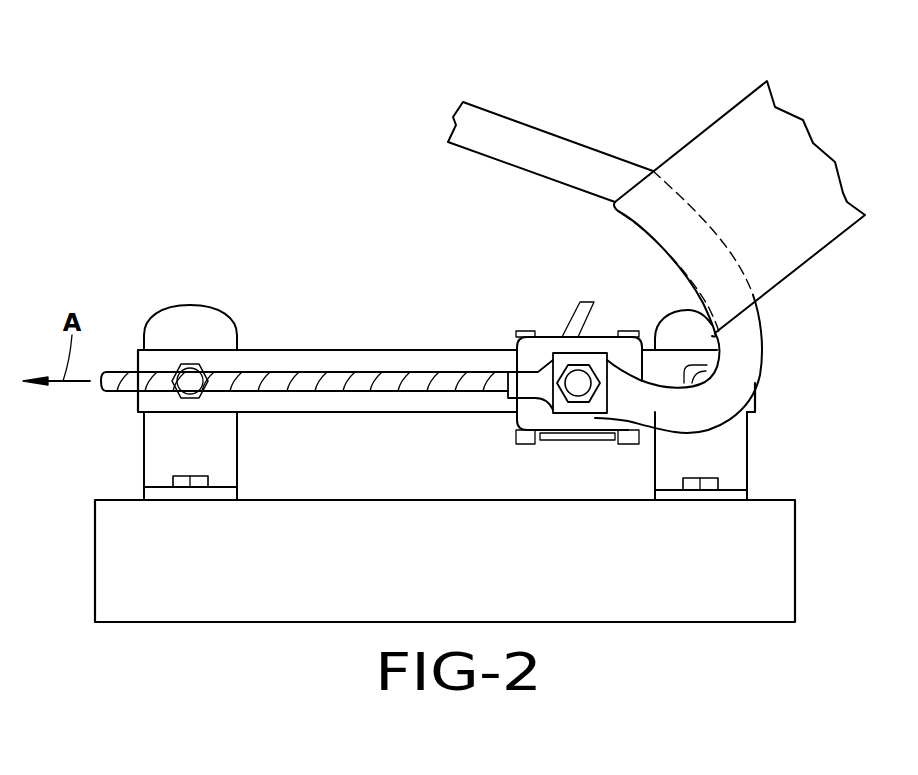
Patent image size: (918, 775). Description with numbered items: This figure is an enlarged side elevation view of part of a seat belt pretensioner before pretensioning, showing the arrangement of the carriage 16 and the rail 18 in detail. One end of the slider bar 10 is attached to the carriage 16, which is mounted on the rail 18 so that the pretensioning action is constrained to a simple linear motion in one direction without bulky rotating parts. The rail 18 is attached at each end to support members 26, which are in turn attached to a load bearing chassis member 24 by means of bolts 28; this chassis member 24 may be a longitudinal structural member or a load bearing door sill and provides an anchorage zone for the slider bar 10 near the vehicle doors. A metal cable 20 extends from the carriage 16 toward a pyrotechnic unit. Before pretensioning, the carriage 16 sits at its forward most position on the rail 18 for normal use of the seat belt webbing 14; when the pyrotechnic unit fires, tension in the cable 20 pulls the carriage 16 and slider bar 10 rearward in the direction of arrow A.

The slider bar 10 is at (528, 150).
The seat belt webbing 14 is at (749, 205).
The carriage 16 is at (562, 347).
The rail 18 is at (340, 362).
The cable 20 is at (280, 372).
The load bearing chassis member 24 is at (428, 573).
The support members 26 is at (217, 443).
The bolts 28 is at (183, 475).